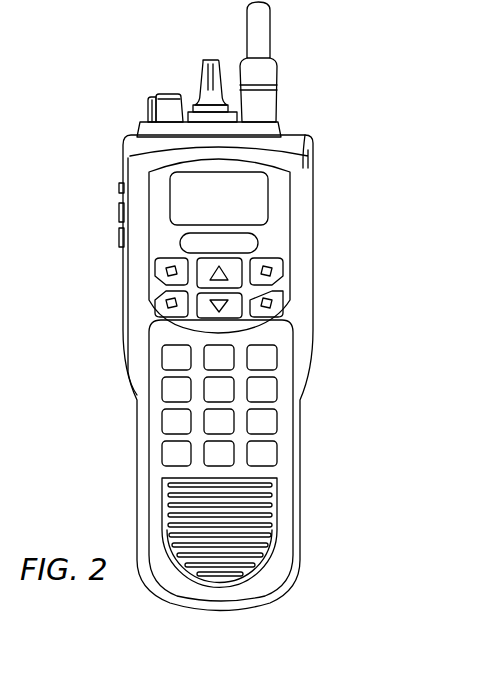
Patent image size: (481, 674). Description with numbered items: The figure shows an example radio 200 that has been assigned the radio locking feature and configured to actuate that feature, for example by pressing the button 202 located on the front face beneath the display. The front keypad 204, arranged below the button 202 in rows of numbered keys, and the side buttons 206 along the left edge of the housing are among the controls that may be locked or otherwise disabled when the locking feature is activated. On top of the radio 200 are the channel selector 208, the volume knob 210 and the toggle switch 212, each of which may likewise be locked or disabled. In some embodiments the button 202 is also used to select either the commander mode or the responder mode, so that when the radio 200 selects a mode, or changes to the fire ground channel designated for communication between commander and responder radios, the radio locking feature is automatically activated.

The radio 200 is at (80, 455).
The button 202 is at (283, 268).
The front keypad 204 is at (279, 357).
The side buttons 206 is at (119, 188).
The channel selector 208 is at (208, 60).
The volume knob 210 is at (148, 109).
The toggle switch 212 is at (238, 112).